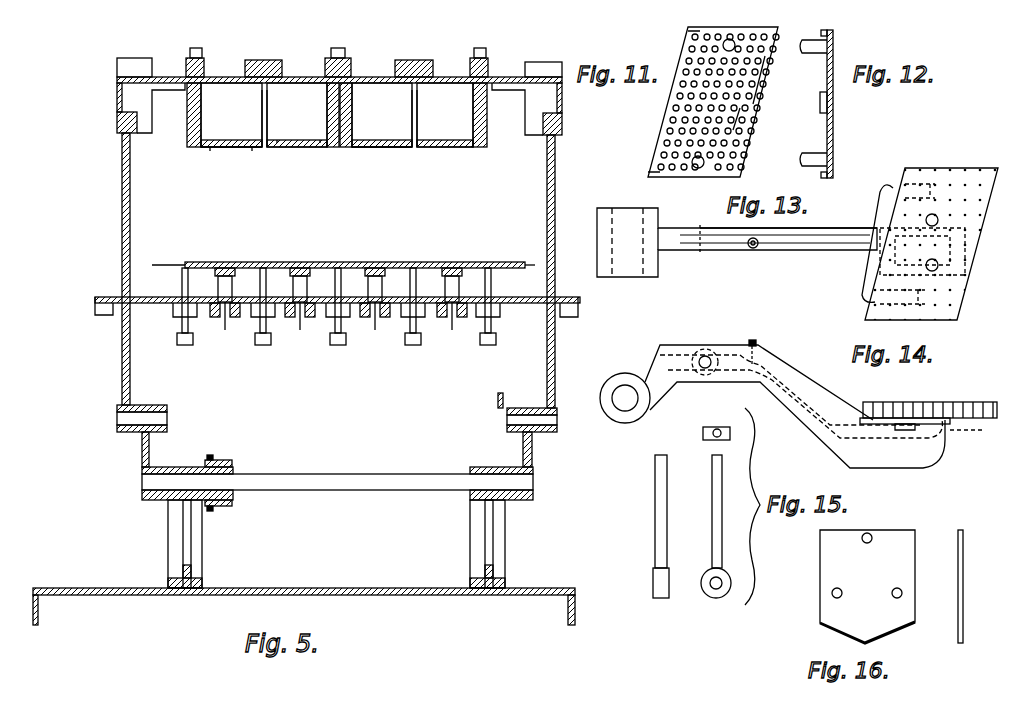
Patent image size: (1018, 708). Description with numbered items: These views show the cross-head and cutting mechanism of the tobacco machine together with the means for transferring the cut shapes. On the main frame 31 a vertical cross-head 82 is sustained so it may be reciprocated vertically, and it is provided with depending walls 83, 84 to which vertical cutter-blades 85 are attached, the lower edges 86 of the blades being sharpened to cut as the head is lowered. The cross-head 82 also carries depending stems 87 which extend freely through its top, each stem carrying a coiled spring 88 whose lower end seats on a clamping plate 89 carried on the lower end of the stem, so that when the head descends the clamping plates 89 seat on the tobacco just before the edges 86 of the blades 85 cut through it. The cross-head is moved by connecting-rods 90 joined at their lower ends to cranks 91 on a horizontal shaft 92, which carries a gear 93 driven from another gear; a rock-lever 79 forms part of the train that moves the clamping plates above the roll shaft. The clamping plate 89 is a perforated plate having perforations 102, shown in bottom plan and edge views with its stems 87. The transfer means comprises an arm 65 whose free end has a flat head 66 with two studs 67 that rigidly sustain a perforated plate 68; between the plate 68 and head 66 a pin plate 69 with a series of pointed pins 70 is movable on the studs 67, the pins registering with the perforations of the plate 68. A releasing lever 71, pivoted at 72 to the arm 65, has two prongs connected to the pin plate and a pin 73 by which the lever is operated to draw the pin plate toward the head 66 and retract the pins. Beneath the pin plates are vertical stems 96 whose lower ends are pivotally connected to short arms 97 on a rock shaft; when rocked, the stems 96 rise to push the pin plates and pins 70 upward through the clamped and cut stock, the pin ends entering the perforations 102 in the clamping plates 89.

In FIG. 5, the main frame 31 is at (578, 312).
In FIG. 13, the arm 65 is at (800, 260).
In FIG. 14, the arm 65 is at (822, 436).
In FIG. 14, the flat head 66 is at (950, 426).
In FIG. 5, the studs 67 is at (305, 262).
In FIG. 13, the studs 67 is at (926, 220).
In FIG. 13, the perforated plate 68 is at (950, 166).
In FIG. 14, the perforated plate 68 is at (897, 402).
In FIG. 14, the pin plate 69 is at (990, 420).
In FIG. 13, the pointed pins 70 is at (877, 244).
In FIG. 14, the pointed pins 70 is at (868, 407).
In FIG. 13, the releasing lever 71 is at (845, 260).
In FIG. 14, the releasing lever 71 is at (795, 385).
In FIG. 14, the pivot 72 is at (708, 355).
In FIG. 13, the pin 73 is at (752, 250).
In FIG. 14, the pin 73 is at (758, 333).
In FIG. 5, the rock-lever 79 is at (498, 400).
In FIG. 5, the cross-head 82 is at (430, 75).
In FIG. 5, the depending wall 83 is at (436, 118).
In FIG. 5, the depending wall 84 is at (260, 103).
In FIG. 5, the cutter-blade 85 is at (268, 107).
In FIG. 16, the cutter-blade 85 is at (958, 580).
In FIG. 16, the lower edge 86 is at (895, 637).
In FIG. 5, the depending stem 87 is at (200, 93).
In FIG. 11, the depending stem 87 is at (698, 168).
In FIG. 12, the depending stem 87 is at (808, 48).
In FIG. 5, the coiled spring 88 is at (325, 112).
In FIG. 5, the clamping plate 89 is at (245, 150).
In FIG. 11, the clamping plate 89 is at (668, 145).
In FIG. 12, the clamping plate 89 is at (833, 131).
In FIG. 5, the connecting-rod 90 is at (130, 205).
In FIG. 5, the crank 91 is at (162, 408).
In FIG. 5, the horizontal shaft 92 is at (350, 474).
In FIG. 5, the gear 93 is at (222, 462).
In FIG. 5, the stem 96 is at (330, 335).
In FIG. 15, the stem 96 is at (703, 433).
In FIG. 5, the short arm 97 is at (255, 345).
In FIG. 11, the perforations 102 is at (673, 104).